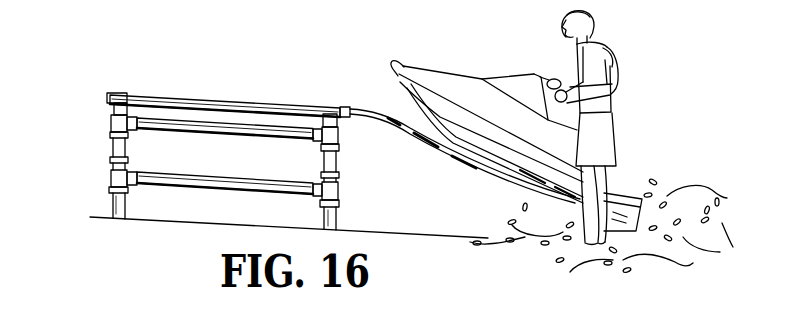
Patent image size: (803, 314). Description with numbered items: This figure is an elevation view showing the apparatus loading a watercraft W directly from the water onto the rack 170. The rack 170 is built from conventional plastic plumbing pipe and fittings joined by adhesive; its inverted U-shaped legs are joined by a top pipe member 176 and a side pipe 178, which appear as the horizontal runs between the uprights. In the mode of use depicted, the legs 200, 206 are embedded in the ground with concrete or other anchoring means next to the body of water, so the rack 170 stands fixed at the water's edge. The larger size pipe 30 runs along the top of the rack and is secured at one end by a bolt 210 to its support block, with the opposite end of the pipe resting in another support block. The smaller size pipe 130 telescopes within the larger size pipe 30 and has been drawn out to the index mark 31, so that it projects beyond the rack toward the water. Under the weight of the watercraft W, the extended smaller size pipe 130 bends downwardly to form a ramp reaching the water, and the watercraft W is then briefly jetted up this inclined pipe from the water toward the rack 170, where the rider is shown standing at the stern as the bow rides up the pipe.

The rack 170 is at (101, 156).
The leg 200 is at (121, 203).
The leg 206 is at (338, 217).
The bolt 210 is at (120, 98).
The larger size pipe 30 is at (254, 98).
The index mark 31 is at (347, 107).
The top pipe member 176 is at (205, 131).
The side pipe 178 is at (277, 190).
The smaller size pipe 130 is at (412, 131).
The watercraft W is at (447, 60).